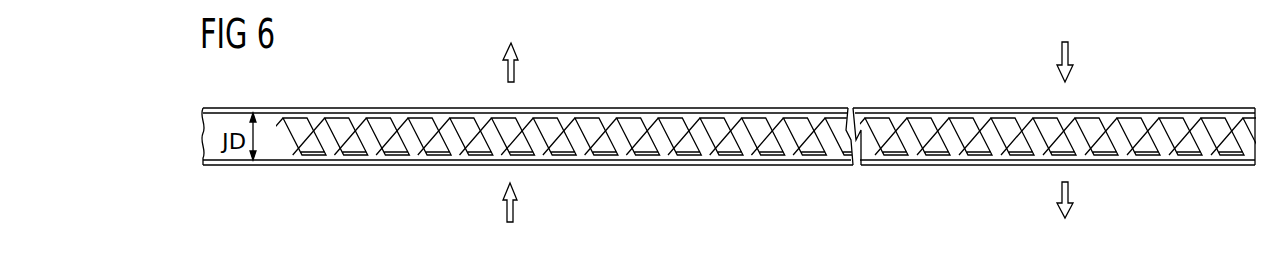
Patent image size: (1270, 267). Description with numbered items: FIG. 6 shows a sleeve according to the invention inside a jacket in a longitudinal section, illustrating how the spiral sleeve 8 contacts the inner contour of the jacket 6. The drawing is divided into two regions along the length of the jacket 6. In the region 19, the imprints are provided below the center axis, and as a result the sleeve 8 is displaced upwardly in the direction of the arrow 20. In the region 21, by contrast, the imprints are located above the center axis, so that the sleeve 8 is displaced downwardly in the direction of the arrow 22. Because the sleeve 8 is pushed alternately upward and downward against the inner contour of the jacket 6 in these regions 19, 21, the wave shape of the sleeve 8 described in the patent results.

The jacket 6 is at (660, 108).
The sleeve 8 is at (594, 122).
The region 19 is at (507, 216).
The arrow 20 is at (507, 70).
The region 21 is at (1068, 188).
The arrow 22 is at (1068, 50).